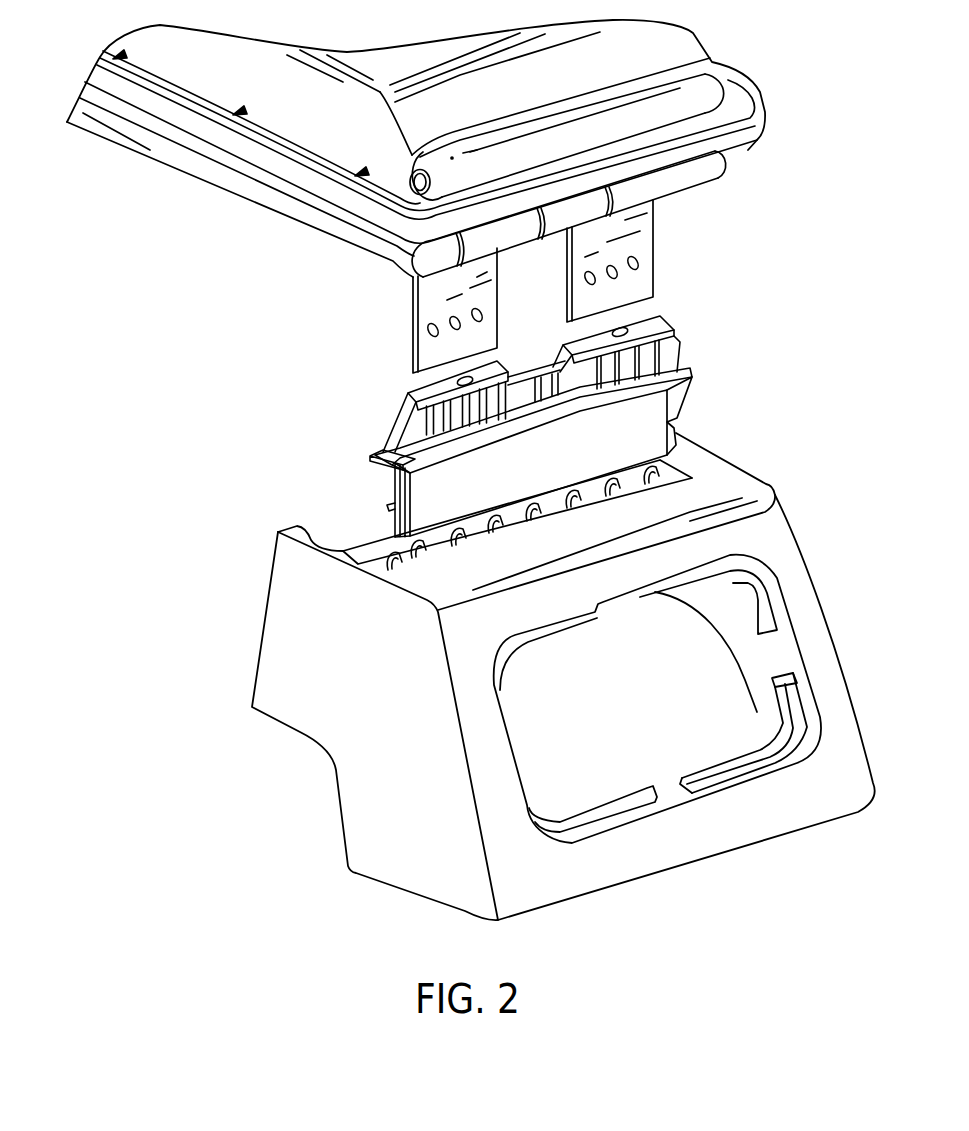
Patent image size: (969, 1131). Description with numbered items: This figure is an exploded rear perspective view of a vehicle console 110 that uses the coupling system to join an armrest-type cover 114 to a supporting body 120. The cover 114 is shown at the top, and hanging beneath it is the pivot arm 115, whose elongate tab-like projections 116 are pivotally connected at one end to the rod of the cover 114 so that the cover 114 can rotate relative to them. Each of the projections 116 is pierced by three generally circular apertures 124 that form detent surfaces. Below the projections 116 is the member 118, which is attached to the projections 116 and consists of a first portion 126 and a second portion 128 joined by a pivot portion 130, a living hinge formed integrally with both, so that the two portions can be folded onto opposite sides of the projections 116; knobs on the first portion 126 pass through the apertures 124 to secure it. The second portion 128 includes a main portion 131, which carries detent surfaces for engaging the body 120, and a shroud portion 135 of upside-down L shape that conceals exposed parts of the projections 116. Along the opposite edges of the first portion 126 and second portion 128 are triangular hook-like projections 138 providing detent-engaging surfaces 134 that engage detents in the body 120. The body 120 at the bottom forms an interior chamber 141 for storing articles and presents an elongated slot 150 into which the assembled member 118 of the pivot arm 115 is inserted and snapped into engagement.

The vehicle console 110 is at (822, 78).
The cover 114 is at (230, 220).
The pivot arm 115 is at (719, 246).
The projections 116 is at (655, 235).
The member 118 is at (660, 383).
The body 120 is at (778, 483).
The apertures 124 is at (638, 264).
The portion 126 is at (665, 412).
The portion 128 is at (450, 316).
The pivot portion 130 is at (392, 536).
The main portion 131 is at (393, 478).
The detent-engaging surfaces 134 is at (670, 418).
The shroud portion 135 is at (403, 405).
The projections 138 is at (672, 428).
The chamber 141 is at (312, 515).
The slot 150 is at (385, 568).